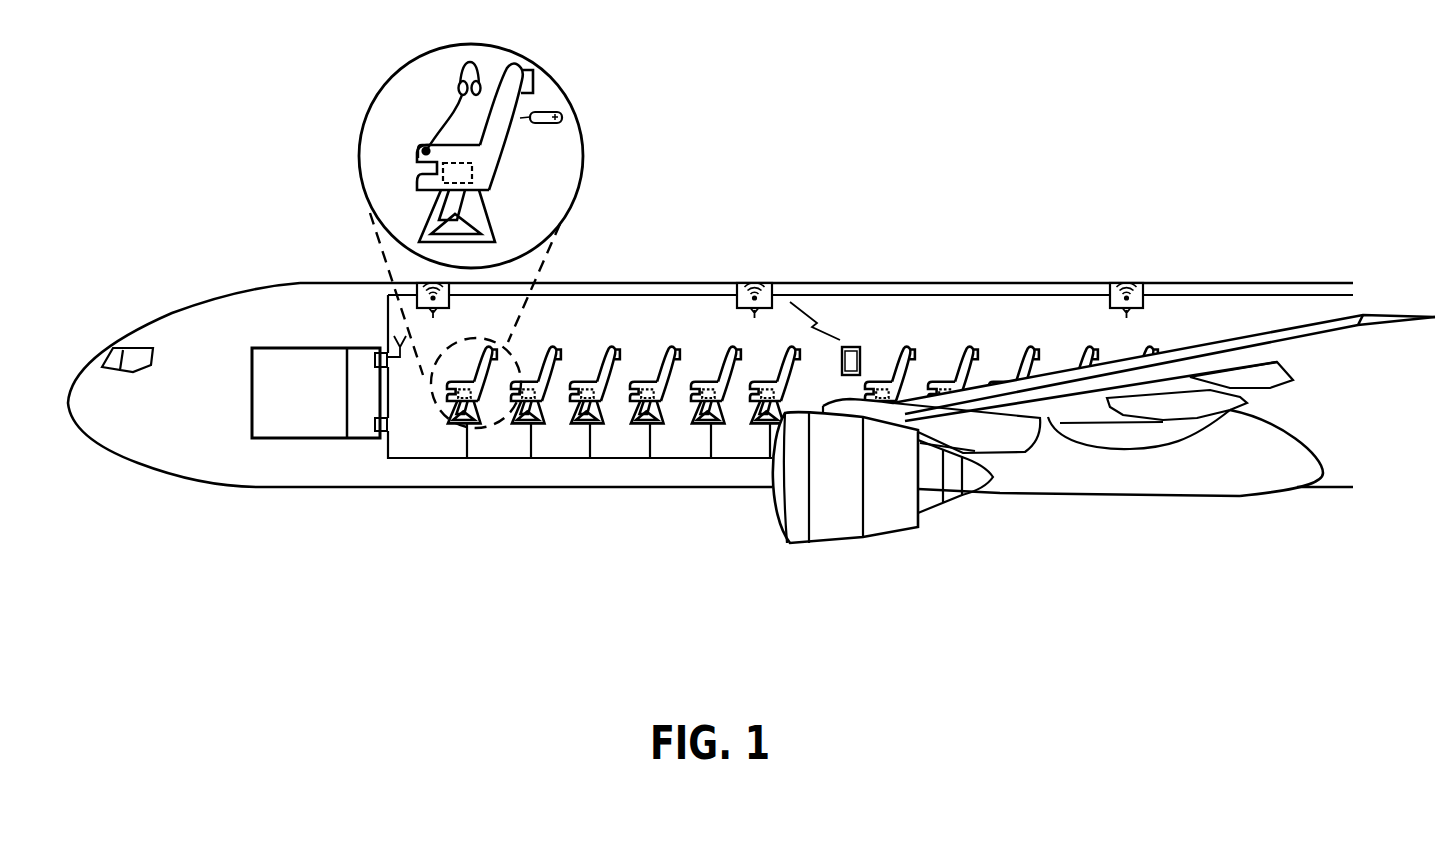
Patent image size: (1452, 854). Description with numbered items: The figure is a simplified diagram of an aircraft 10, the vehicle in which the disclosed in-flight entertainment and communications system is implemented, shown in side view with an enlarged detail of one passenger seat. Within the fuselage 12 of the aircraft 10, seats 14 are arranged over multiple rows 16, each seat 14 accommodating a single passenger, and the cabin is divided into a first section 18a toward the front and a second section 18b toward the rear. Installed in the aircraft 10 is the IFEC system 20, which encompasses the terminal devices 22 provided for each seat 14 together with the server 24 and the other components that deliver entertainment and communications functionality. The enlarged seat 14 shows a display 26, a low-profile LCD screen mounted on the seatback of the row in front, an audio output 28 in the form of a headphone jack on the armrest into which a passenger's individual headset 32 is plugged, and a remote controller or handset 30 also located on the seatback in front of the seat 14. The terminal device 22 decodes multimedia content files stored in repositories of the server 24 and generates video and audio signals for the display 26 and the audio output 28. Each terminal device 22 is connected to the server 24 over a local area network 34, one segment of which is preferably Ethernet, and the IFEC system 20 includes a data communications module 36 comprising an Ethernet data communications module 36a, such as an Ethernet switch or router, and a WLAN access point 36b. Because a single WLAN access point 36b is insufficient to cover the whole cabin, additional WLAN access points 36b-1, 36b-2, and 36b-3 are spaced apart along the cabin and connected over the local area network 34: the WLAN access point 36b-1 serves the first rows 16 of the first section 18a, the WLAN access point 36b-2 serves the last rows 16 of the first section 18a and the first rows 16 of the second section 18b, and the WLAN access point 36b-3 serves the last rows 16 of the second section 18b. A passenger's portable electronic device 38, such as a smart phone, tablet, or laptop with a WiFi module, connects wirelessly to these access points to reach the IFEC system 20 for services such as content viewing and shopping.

The aircraft 10 is at (692, 542).
The fuselage 12 is at (1040, 283).
The seat 14 is at (488, 178).
The rows 16 is at (794, 381).
The first section 18a is at (802, 342).
The second section 18b is at (1155, 342).
The in-flight entertainment and communications (IFEC) system 20 is at (309, 438).
The terminal device 22 is at (419, 192).
The server 24 is at (359, 393).
The display 26 is at (532, 78).
The audio output 28 is at (424, 150).
The remote controller or handset 30 is at (685, 283).
The headset 32 is at (457, 88).
The local area network 34 is at (432, 460).
The data communications module 36 is at (363, 348).
The Ethernet data communications module 36a is at (389, 436).
The WLAN access point 36b is at (389, 367).
The WLAN access point 36b-1 is at (446, 308).
The WLAN access point 36b-2 is at (762, 283).
The WLAN access point 36b-3 is at (1128, 283).
The portable electronic device (PED) 38 is at (850, 347).